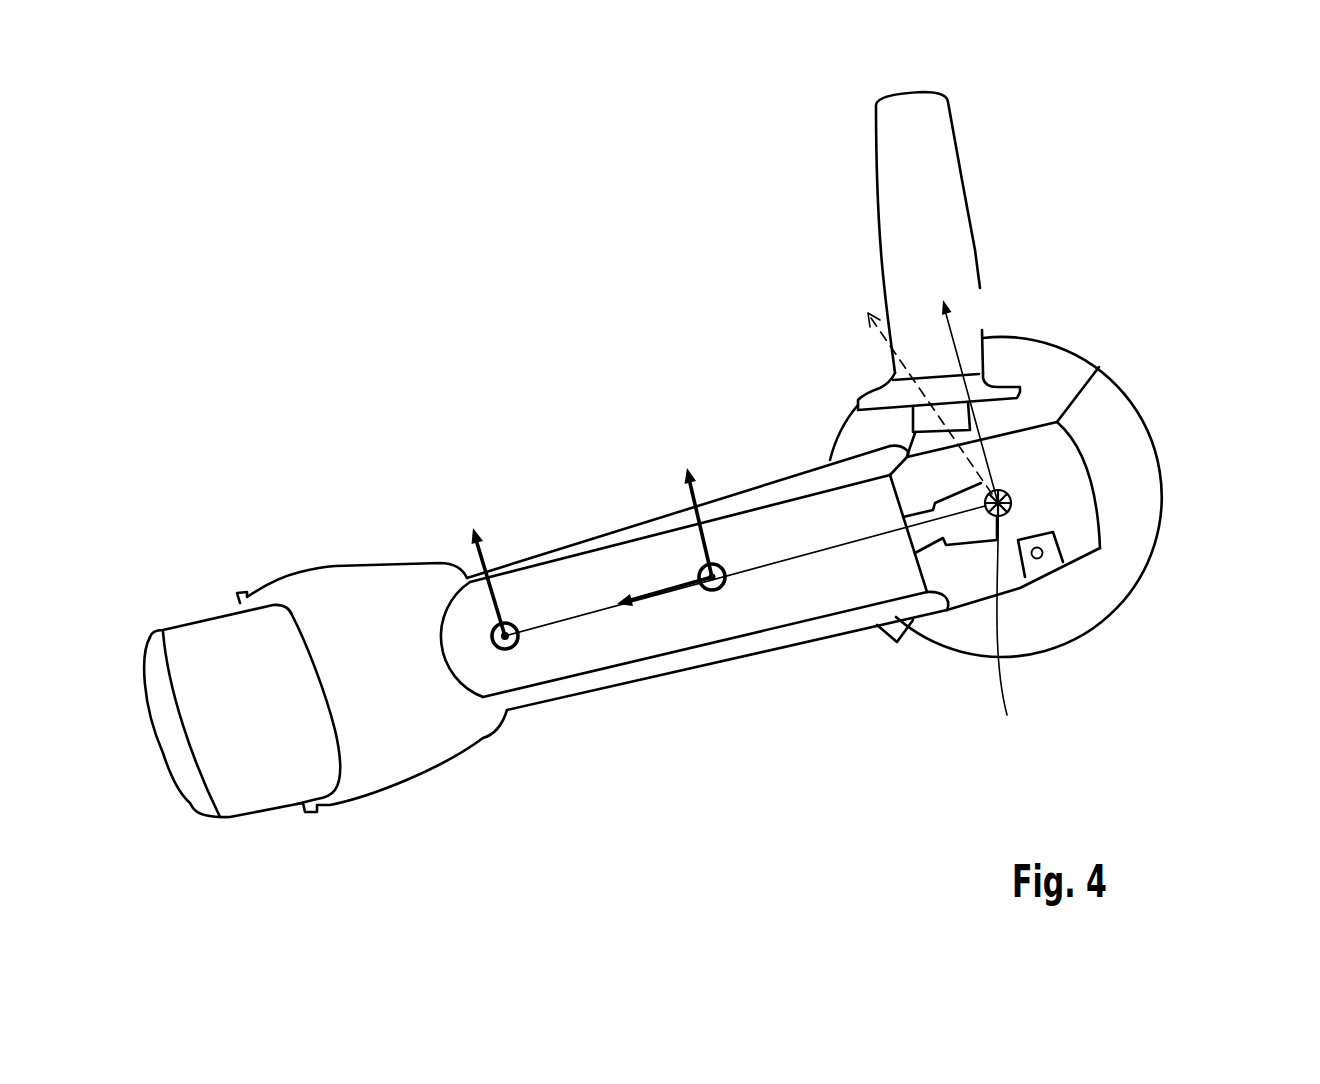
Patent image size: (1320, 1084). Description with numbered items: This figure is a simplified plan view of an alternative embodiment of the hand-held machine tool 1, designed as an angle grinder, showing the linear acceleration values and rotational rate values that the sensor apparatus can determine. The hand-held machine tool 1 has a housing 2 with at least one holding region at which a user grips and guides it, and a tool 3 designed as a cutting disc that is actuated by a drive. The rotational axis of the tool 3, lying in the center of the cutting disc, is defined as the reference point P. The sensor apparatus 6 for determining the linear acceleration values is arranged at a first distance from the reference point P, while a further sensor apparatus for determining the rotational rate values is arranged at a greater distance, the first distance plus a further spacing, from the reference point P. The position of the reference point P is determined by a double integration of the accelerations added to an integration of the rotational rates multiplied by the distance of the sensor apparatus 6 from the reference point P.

The hand-held machine tool 1 is at (1185, 252).
The housing 2 is at (595, 660).
The tool 3 is at (1130, 460).
The sensor apparatus 6 is at (722, 592).